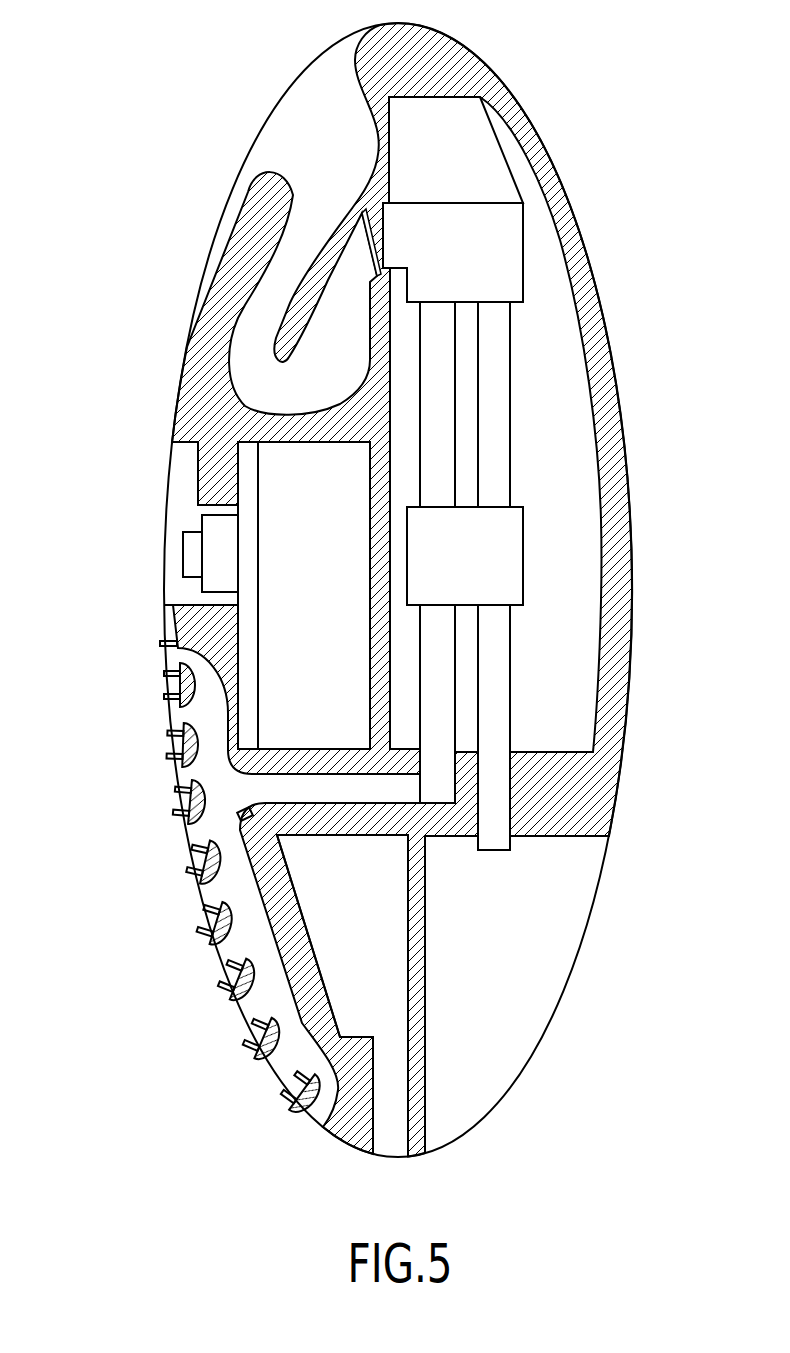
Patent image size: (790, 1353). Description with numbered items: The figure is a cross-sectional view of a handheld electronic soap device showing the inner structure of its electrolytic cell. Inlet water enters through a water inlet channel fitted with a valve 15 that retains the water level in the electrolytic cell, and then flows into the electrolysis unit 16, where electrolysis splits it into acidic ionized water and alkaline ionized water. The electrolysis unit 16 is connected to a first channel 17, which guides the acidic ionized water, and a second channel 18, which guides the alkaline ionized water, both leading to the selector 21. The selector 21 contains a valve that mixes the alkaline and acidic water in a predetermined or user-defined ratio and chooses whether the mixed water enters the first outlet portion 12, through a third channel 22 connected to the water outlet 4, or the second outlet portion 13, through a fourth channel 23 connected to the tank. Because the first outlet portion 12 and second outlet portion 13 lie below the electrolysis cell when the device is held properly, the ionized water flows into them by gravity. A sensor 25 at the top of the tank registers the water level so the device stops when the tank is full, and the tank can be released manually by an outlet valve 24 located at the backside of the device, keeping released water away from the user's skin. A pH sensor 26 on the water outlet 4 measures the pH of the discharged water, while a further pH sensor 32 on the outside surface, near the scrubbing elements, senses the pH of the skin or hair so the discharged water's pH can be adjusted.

The water outlet 4 is at (252, 1012).
The first outlet portion 12 is at (348, 792).
The second outlet portion 13 is at (498, 792).
The valve 15 is at (366, 213).
The electrolysis unit 16 is at (500, 257).
The first channel 17 is at (442, 410).
The second channel 18 is at (497, 455).
The selector 21 is at (508, 560).
The third channel 22 is at (442, 662).
The fourth channel 23 is at (497, 705).
The outlet valve 24 is at (510, 1088).
The sensor 25 is at (493, 845).
The pH sensor 26 is at (235, 818).
The pH sensor 32 is at (183, 867).